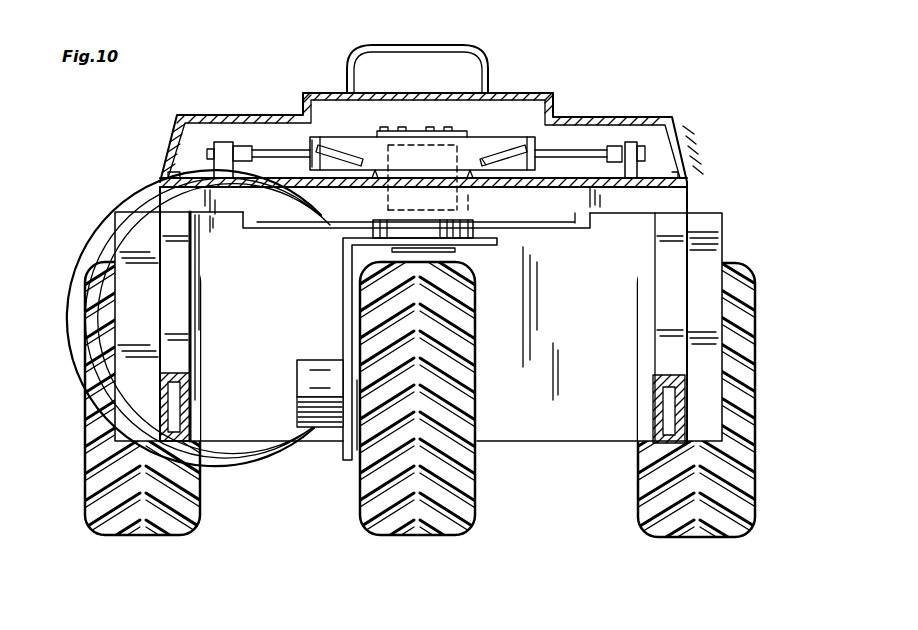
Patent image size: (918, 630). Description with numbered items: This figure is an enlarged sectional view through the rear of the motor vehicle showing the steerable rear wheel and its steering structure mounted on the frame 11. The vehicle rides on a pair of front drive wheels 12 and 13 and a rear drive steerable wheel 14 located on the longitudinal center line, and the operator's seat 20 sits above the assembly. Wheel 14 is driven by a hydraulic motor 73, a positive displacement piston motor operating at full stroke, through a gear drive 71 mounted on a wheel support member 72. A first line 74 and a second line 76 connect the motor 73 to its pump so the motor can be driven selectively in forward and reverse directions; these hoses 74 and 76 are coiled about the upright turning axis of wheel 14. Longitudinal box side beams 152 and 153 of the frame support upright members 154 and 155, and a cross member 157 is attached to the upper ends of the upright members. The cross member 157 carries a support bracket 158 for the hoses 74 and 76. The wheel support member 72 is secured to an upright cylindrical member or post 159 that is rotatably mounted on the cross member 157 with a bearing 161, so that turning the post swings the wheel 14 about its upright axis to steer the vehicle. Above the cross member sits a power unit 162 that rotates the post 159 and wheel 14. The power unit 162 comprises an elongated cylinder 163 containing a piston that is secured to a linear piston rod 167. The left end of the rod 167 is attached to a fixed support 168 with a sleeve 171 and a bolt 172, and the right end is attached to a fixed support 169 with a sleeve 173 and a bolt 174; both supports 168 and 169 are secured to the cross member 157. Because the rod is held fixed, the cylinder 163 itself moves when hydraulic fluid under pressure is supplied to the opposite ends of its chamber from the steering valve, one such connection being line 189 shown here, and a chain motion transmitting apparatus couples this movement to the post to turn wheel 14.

The frame 11 is at (160, 210).
The front drive wheel 12 is at (755, 322).
The front drive wheel 13 is at (87, 308).
The rear drive steerable wheel 14 is at (466, 488).
The seat 20 is at (424, 45).
The gear drive 71 is at (352, 463).
The support member 72 is at (343, 442).
The hydraulic motor 73 is at (311, 365).
The first line 74 is at (280, 312).
The second line 76 is at (270, 284).
The longitudinal box side beam 152 is at (192, 417).
The longitudinal box side beam 153 is at (655, 403).
The upright member 154 is at (182, 352).
The upright member 155 is at (668, 302).
The cross member 157 is at (213, 200).
The support bracket 158 is at (550, 233).
The upright cylindrical member or post 159 is at (437, 200).
The bearing 161 is at (388, 200).
The power unit 162 is at (513, 120).
The elongated cylinder 163 is at (478, 145).
The linear piston rod 167 is at (553, 156).
The fixed support 168 is at (223, 142).
The fixed support 169 is at (630, 142).
The sleeve 171 is at (250, 157).
The bolt 172 is at (207, 153).
The sleeve 173 is at (606, 160).
The bolt 174 is at (645, 152).
The line 189 is at (502, 152).